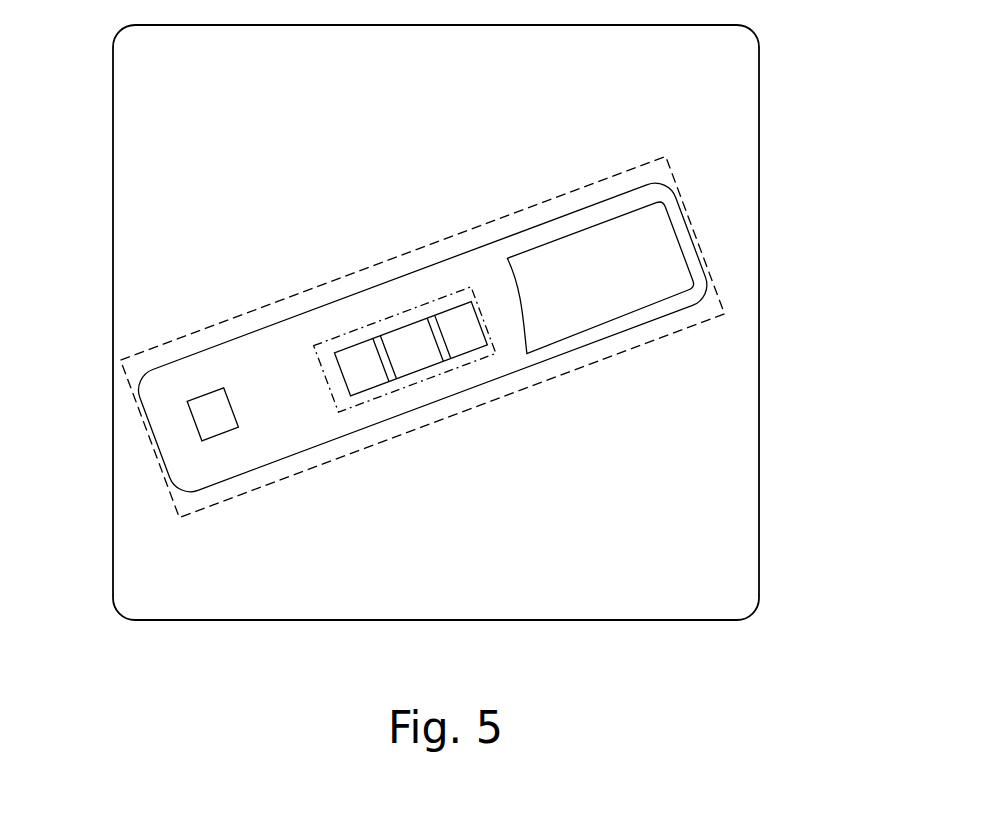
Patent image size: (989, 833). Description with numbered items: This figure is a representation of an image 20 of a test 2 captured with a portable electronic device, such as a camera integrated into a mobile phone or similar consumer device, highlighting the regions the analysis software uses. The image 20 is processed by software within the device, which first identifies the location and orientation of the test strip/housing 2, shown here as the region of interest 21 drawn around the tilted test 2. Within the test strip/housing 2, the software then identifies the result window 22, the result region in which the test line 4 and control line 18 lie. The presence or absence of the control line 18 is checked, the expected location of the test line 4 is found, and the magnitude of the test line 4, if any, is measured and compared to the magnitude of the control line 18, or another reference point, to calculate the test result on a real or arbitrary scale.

The image 20 is at (761, 129).
The region of interest 21 is at (167, 338).
The test 2 is at (152, 442).
The test line 4 is at (373, 336).
The control line 18 is at (428, 319).
The result window 22 is at (378, 399).